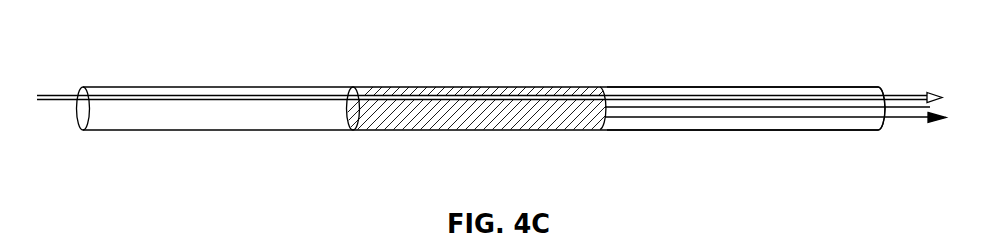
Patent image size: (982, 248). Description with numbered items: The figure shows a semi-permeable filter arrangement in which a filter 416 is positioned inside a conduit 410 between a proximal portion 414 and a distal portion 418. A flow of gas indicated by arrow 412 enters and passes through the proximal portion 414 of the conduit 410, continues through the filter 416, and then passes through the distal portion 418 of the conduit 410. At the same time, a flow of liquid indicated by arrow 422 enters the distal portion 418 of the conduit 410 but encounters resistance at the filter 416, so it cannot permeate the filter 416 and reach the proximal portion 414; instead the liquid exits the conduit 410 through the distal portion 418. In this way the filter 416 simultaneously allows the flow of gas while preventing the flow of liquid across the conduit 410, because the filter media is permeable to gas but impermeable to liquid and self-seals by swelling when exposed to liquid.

The conduit 410 is at (66, 129).
The arrow indicating flow of gas 412 is at (61, 96).
The proximal portion of conduit 414 is at (310, 87).
The semi-permeable filter 416 is at (528, 87).
The distal portion of conduit 418 is at (760, 87).
The arrow indicating flow of liquid 422 is at (908, 120).